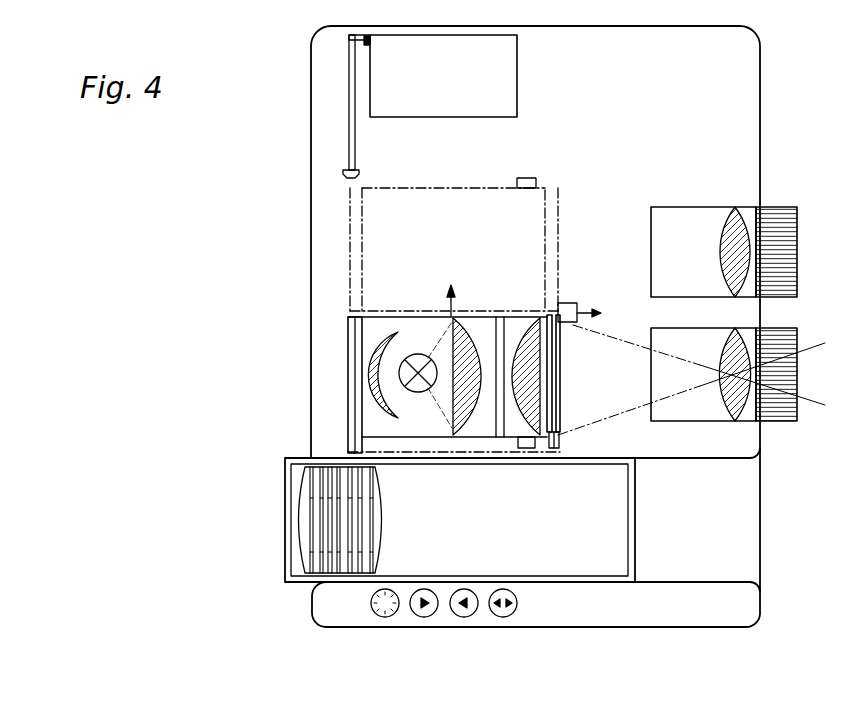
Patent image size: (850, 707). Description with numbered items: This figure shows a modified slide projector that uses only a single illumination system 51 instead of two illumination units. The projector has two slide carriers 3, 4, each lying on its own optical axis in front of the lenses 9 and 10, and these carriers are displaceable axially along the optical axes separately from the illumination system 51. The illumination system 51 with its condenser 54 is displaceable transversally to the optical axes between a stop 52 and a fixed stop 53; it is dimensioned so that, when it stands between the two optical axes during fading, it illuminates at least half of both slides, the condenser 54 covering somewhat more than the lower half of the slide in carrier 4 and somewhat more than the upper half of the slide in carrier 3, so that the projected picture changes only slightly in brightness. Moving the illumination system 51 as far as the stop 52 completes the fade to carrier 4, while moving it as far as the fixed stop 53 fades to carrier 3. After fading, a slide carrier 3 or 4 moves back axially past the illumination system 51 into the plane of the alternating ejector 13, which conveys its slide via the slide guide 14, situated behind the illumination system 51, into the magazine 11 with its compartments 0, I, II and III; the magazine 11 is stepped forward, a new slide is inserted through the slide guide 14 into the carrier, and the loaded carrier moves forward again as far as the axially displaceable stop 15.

The alternating ejector 13 is at (350, 88).
The stop 52 is at (525, 178).
The slide carrier 4 is at (556, 193).
The lens 10 is at (736, 215).
The stop 15 is at (569, 304).
The illumination system 51 is at (375, 332).
The slide guide 14 is at (352, 413).
The slide carrier 3 is at (562, 441).
The lens 9 is at (745, 422).
The condenser 54 is at (518, 440).
The fixed stop 53 is at (528, 448).
The magazine 11 is at (568, 563).
The compartment III is at (318, 572).
The compartment II is at (330, 572).
The compartment I is at (345, 572).
The compartment 0 is at (355, 572).